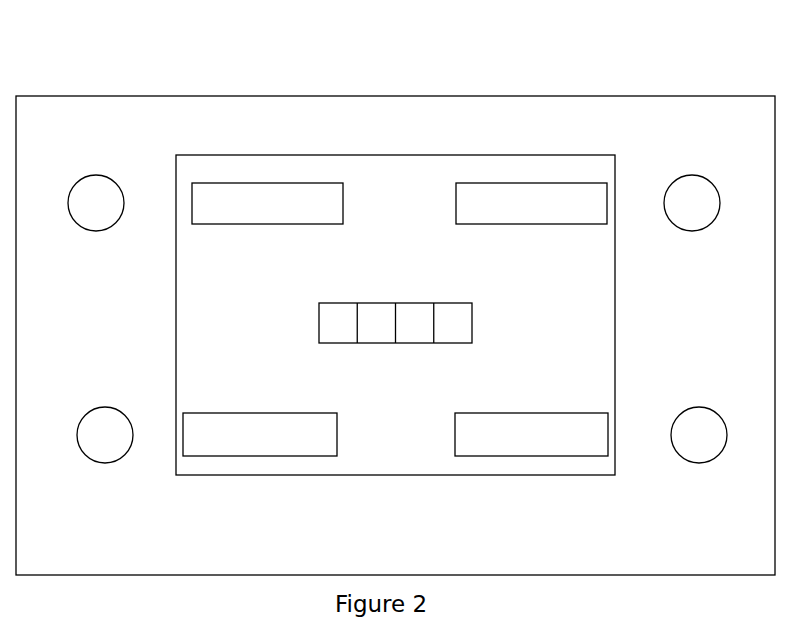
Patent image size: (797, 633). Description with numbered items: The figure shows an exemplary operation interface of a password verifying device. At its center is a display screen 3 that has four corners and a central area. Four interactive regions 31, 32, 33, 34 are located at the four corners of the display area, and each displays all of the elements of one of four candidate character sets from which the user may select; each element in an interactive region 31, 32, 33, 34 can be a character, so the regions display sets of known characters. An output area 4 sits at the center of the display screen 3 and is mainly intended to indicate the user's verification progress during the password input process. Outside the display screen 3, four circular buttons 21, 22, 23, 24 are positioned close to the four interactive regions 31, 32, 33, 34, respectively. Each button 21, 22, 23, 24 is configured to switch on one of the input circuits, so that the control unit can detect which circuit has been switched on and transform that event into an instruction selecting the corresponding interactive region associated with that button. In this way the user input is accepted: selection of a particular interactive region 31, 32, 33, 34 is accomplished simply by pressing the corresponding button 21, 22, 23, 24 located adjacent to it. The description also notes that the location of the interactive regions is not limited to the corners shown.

The display screen 3 is at (377, 155).
The output area 4 is at (375, 303).
The circular button 21 is at (96, 175).
The circular button 22 is at (696, 175).
The circular button 23 is at (102, 407).
The circular button 24 is at (696, 407).
The interactive region 31 is at (239, 183).
The interactive region 32 is at (577, 183).
The interactive region 33 is at (256, 413).
The interactive region 34 is at (553, 413).